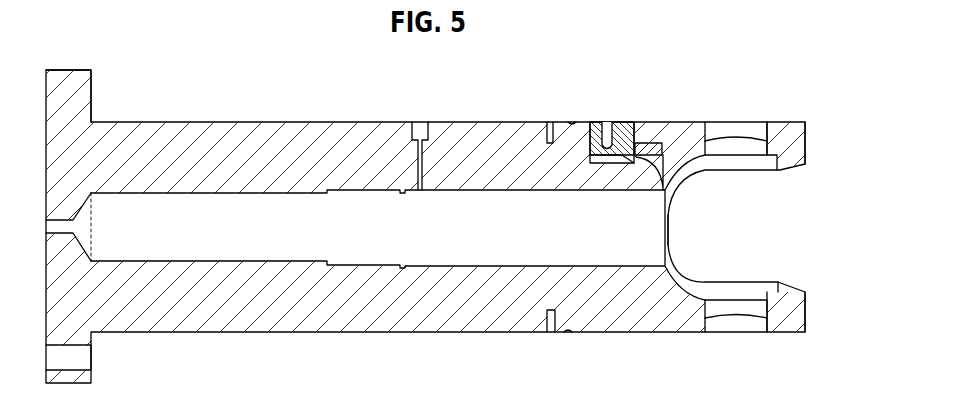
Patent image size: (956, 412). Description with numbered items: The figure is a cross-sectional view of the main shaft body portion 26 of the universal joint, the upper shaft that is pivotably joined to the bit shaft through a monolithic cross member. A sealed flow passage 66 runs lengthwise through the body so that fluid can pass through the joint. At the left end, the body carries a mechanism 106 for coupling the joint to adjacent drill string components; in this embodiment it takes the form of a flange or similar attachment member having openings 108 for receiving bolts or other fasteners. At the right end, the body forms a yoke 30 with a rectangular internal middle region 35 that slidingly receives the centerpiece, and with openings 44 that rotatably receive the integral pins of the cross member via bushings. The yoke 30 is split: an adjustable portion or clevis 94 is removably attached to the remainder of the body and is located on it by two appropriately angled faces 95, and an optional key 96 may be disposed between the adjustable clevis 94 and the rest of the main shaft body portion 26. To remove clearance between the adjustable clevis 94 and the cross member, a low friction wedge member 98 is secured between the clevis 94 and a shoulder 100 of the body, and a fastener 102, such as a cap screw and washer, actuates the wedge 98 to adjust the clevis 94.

The main shaft body portion 26 is at (286, 109).
The sealed flow passage 66 is at (213, 241).
The mechanism for coupling 106 is at (93, 93).
The openings 108 is at (82, 360).
The wedge member 98 is at (590, 140).
The fastener 102 is at (606, 126).
The key 96 is at (650, 142).
The shoulder 100 is at (598, 163).
The angled faces 95 is at (645, 163).
The openings 44 is at (738, 138).
The adjustable portion/clevis 94 is at (786, 122).
The internal middle region 35 is at (778, 221).
The yoke 30 is at (787, 343).